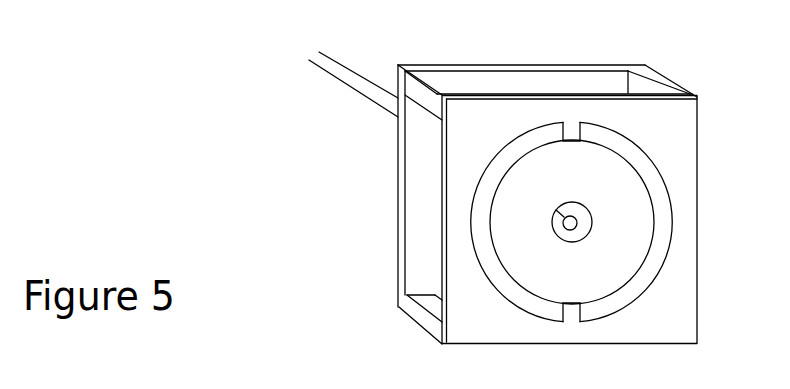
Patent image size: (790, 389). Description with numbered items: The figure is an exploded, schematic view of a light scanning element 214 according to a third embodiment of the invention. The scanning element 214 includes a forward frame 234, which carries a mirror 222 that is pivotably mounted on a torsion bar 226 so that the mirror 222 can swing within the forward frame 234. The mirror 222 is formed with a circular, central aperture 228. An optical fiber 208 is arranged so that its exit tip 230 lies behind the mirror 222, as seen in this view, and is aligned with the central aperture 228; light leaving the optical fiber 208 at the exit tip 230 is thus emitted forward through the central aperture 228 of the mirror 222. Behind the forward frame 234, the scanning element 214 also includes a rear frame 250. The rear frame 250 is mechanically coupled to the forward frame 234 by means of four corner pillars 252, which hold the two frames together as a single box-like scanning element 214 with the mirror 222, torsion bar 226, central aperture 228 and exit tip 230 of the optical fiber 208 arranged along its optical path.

The scanning element 214 is at (180, 74).
The optical fiber 208 is at (328, 72).
The rear frame 250 is at (553, 65).
The corner pillars 252 is at (459, 80).
The forward frame 234 is at (497, 336).
The mirror 222 is at (640, 268).
The torsion bar 226 is at (583, 135).
The central aperture 228 is at (590, 207).
The exit tip 230 is at (578, 229).